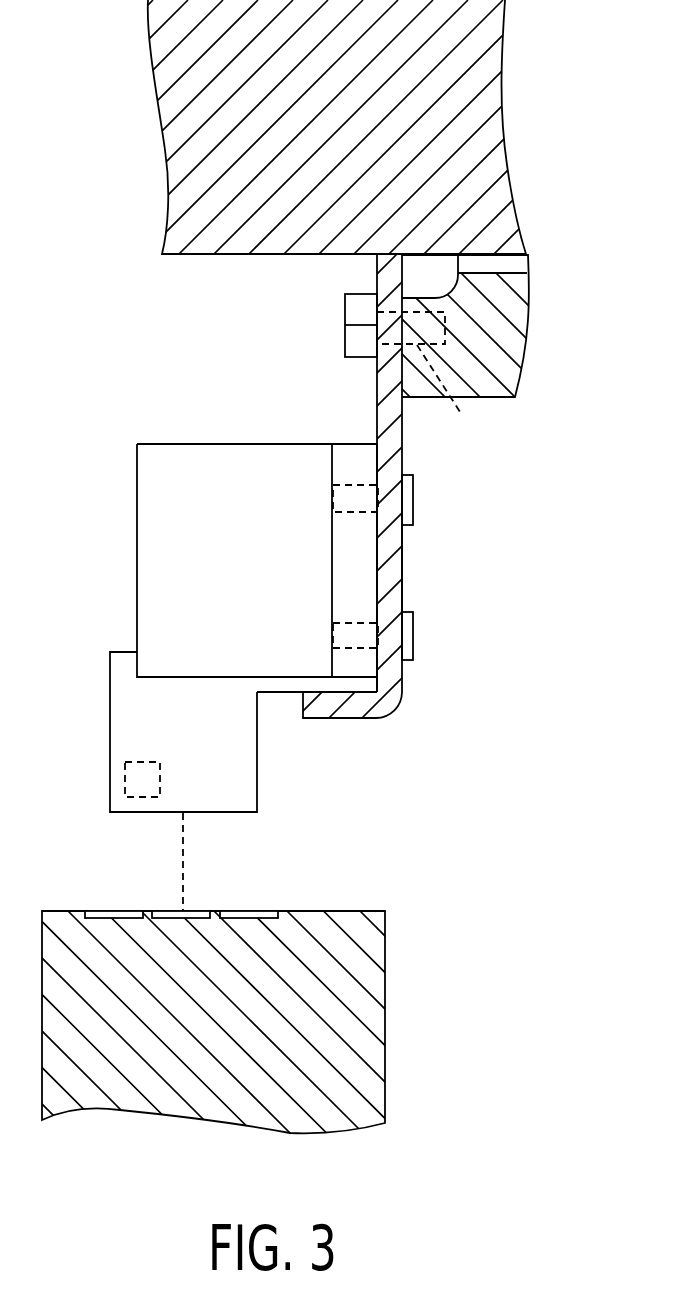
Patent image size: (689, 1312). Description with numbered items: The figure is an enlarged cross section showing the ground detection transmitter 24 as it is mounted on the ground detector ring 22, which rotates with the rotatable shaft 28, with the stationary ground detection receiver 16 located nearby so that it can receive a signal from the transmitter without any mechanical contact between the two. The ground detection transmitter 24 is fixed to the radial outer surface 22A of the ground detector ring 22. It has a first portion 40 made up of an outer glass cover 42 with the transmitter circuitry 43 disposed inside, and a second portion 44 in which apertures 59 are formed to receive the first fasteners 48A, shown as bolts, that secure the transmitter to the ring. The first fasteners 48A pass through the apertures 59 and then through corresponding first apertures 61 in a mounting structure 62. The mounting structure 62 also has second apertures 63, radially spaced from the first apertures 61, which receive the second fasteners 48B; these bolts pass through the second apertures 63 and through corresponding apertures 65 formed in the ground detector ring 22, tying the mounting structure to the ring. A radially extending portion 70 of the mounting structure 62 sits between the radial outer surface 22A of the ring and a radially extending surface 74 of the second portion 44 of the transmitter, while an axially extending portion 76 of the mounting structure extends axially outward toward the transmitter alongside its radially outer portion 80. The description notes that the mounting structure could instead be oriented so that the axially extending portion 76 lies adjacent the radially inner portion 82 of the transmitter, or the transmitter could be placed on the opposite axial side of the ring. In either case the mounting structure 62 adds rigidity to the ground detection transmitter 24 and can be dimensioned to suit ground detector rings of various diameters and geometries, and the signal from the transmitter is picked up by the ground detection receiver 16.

The ground detection receiver 16 is at (375, 1018).
The ground detector ring 22 is at (507, 342).
The radial outer surface 22A is at (400, 360).
The ground detection transmitter 24 is at (213, 560).
The rotatable shaft 28 is at (490, 208).
The first portion 40 is at (208, 754).
The outer glass cover 42 is at (160, 813).
The transmitter circuitry 43 is at (120, 785).
The second portion 44 is at (222, 580).
The first fasteners 48A is at (413, 493).
The second fasteners 48B is at (358, 335).
The apertures 59 is at (350, 505).
The first apertures 61 is at (380, 530).
The mounting structure 62 is at (383, 740).
The second apertures 63 is at (352, 318).
The apertures 65 is at (445, 396).
The radially extending portion 70 is at (388, 573).
The radially extending surface 74 is at (379, 456).
The axially extending portion 76 is at (323, 707).
The radially outer portion 80 is at (267, 693).
The radially inner portion 82 is at (183, 443).